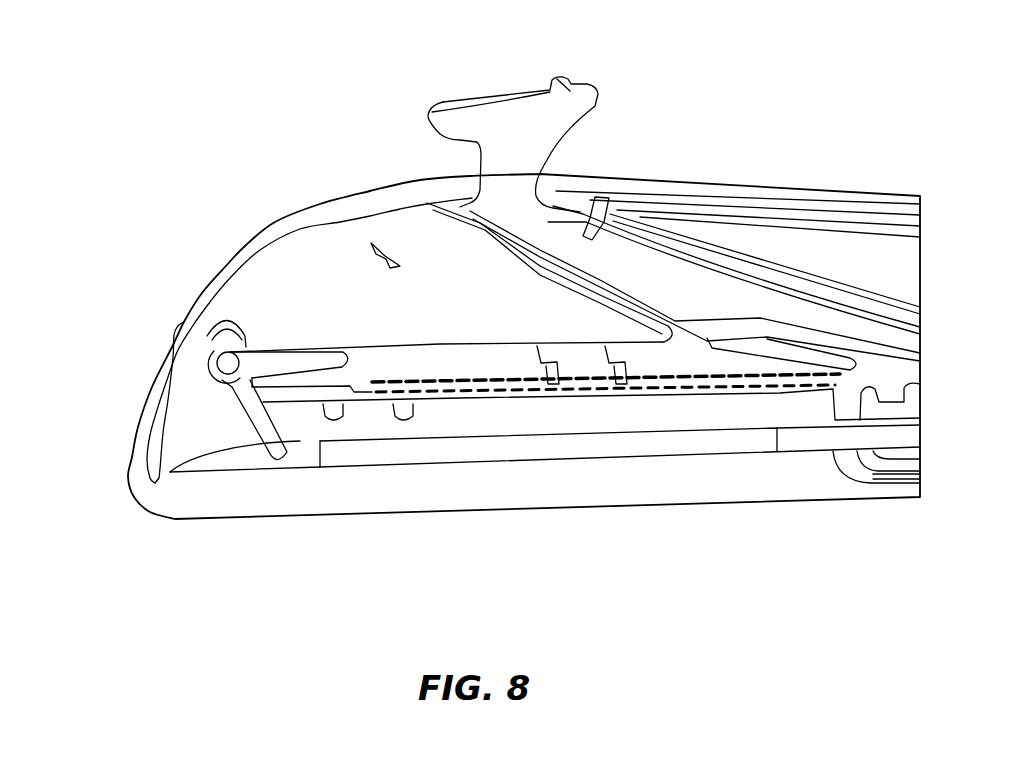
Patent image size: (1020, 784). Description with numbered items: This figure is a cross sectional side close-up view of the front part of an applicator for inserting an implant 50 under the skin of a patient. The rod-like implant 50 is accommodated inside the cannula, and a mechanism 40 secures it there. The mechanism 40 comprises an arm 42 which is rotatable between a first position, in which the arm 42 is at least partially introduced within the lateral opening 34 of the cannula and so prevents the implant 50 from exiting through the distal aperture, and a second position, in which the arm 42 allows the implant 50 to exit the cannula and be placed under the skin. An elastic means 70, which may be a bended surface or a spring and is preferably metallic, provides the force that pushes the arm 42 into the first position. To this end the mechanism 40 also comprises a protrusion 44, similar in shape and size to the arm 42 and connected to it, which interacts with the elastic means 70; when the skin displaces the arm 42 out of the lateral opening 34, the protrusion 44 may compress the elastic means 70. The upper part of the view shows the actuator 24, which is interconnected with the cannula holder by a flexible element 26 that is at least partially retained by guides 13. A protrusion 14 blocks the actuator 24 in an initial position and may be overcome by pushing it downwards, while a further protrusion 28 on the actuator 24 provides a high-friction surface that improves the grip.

The guides 13 is at (740, 347).
The protrusion 14 is at (632, 205).
The actuator 24 is at (497, 103).
The flexible element 26 is at (834, 300).
The protrusion 28 is at (566, 76).
The lateral opening 34 is at (300, 450).
The mechanism 40 is at (228, 363).
The arm 42 is at (264, 428).
The protrusion 44 is at (280, 364).
The implant 50 is at (491, 453).
The elastic means 70 is at (404, 341).